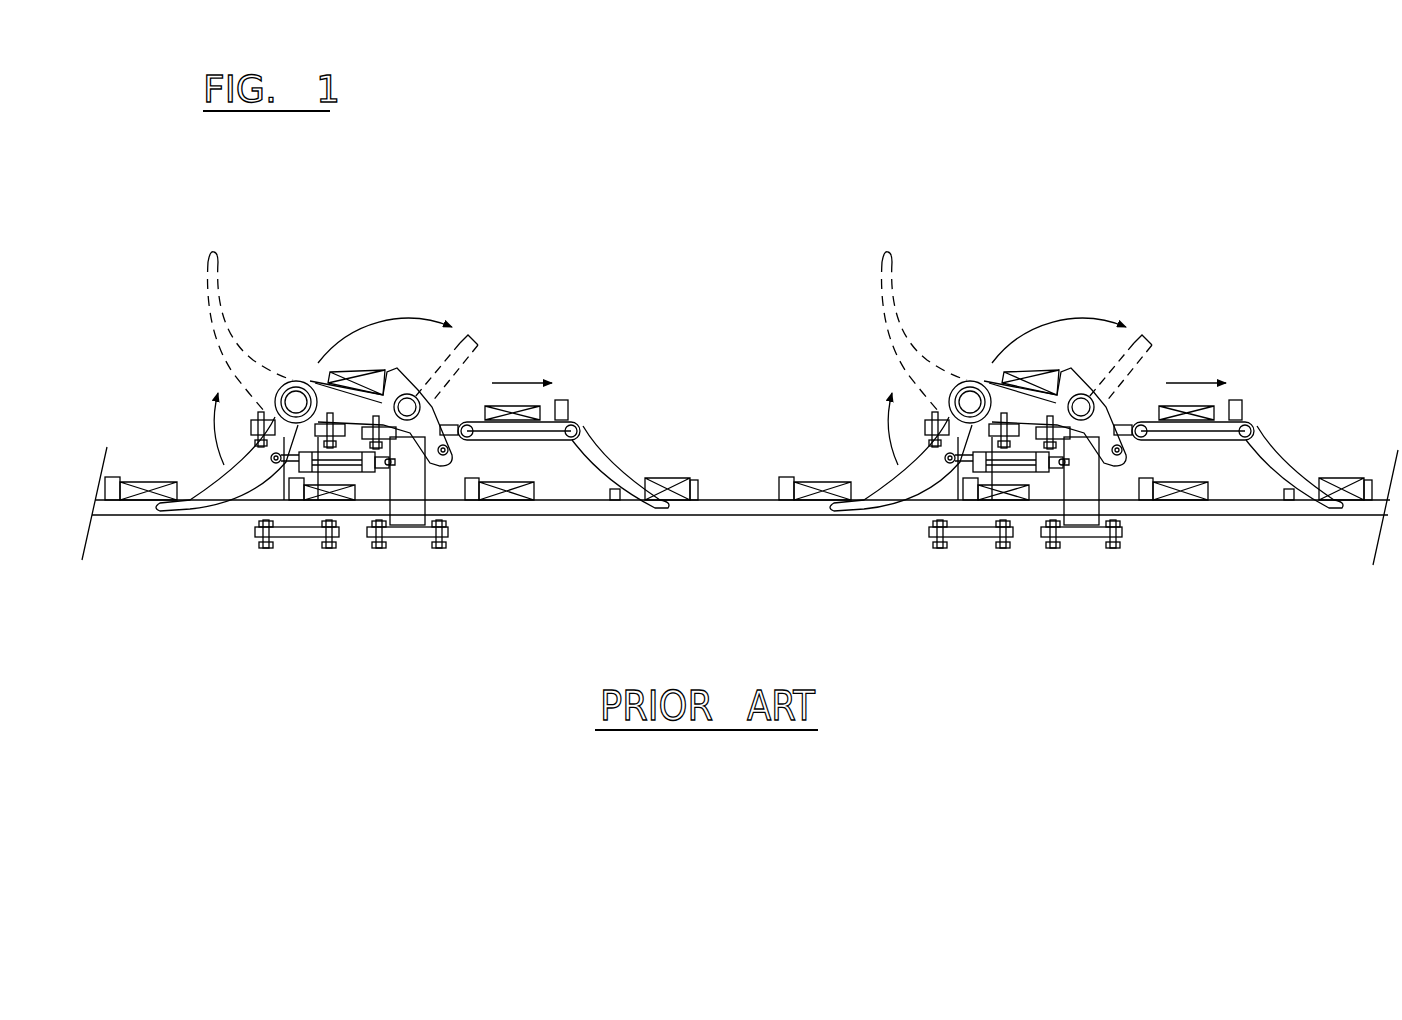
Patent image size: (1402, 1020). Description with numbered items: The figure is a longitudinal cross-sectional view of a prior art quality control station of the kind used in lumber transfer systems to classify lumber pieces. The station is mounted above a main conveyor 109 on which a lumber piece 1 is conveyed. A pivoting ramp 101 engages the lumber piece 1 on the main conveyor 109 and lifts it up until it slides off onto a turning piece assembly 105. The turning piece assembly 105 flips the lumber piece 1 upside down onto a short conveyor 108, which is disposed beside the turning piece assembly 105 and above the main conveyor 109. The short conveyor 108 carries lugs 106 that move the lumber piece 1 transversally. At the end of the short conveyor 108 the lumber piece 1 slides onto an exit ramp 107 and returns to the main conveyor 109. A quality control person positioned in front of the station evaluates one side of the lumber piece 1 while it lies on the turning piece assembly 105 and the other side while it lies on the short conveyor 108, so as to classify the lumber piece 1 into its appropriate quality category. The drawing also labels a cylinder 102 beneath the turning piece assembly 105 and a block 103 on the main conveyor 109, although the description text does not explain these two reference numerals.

The lumber piece 1 is at (830, 478).
The pivoting ramp 101 is at (895, 493).
The cylinder 102 is at (1003, 463).
The stopper block 103 is at (790, 490).
The turning piece assembly 105 is at (1070, 378).
The lugs 106 is at (1238, 400).
The exit ramp 107 is at (1276, 462).
The short conveyor 108 is at (1228, 432).
The main conveyor 109 is at (1160, 508).